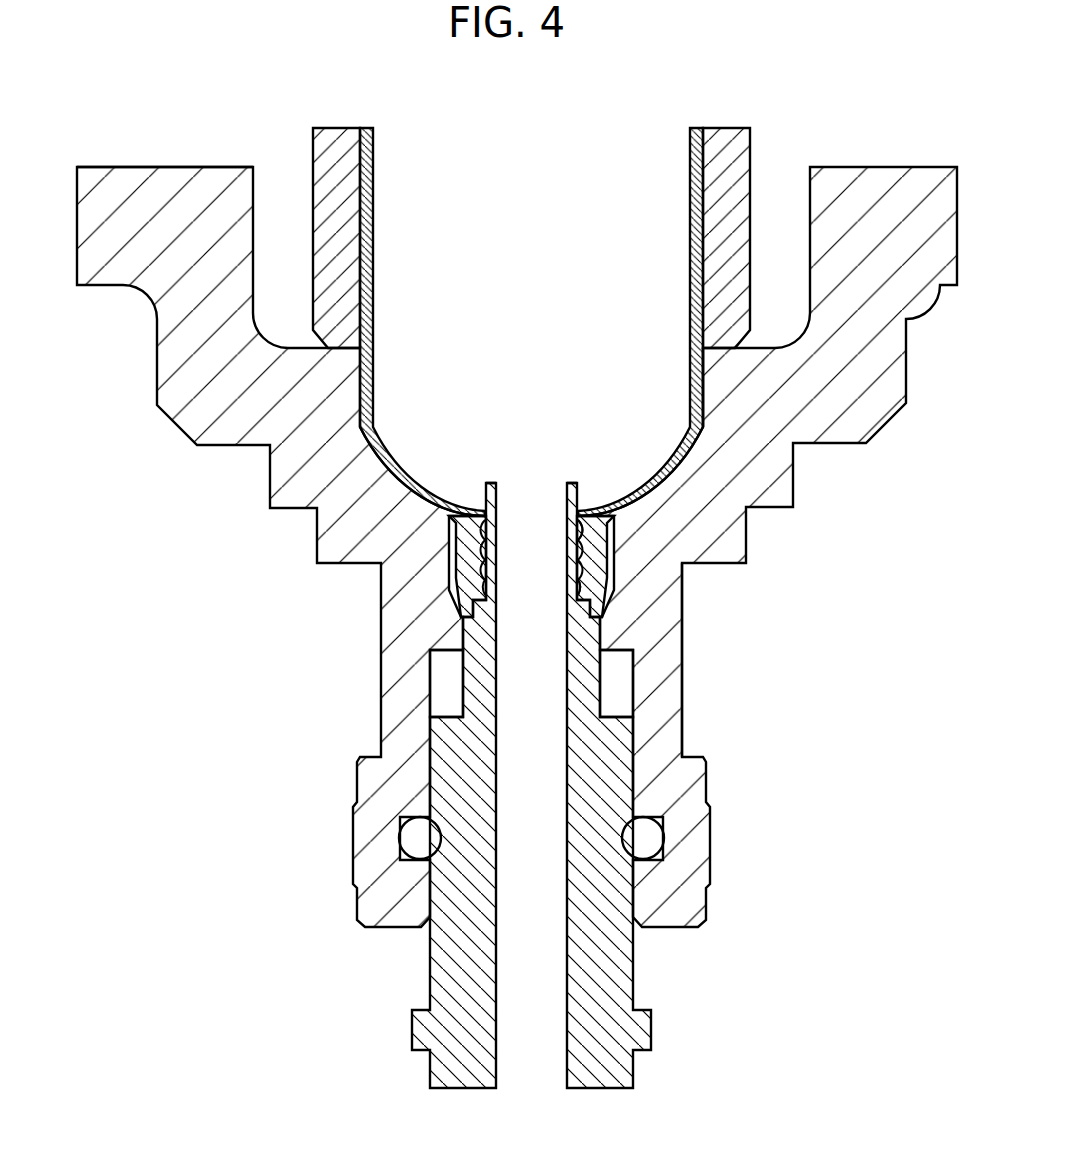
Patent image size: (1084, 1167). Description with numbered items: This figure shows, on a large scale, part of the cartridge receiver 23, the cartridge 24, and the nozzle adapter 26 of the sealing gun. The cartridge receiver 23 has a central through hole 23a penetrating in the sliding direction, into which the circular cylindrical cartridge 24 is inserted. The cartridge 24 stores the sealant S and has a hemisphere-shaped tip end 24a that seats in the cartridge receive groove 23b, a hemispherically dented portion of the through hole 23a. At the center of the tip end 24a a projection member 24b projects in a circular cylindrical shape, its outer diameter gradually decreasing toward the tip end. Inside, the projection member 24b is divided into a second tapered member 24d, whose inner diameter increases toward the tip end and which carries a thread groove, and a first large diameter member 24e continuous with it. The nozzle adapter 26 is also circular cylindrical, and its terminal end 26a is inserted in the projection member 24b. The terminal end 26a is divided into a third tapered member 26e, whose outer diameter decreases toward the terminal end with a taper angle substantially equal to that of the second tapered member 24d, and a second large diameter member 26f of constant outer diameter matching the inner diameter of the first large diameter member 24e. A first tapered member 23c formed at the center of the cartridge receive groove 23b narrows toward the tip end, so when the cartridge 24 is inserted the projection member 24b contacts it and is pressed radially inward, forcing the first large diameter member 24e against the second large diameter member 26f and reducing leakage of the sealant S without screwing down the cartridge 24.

The cartridge receiver 23 is at (112, 167).
The through hole 23a is at (263, 153).
The cartridge receive groove 23b is at (697, 473).
The first tapered member 23c is at (605, 587).
The cartridge 24 is at (521, 381).
The tip end 24a is at (378, 483).
The projection member 24b is at (532, 557).
The second tapered member 24d is at (582, 525).
The first large diameter member 24e is at (560, 613).
The nozzle adapter 26 is at (499, 778).
The terminal end 26a is at (500, 483).
The third tapered member 26e is at (467, 560).
The second large diameter member 26f is at (460, 620).
The sealant S is at (653, 183).